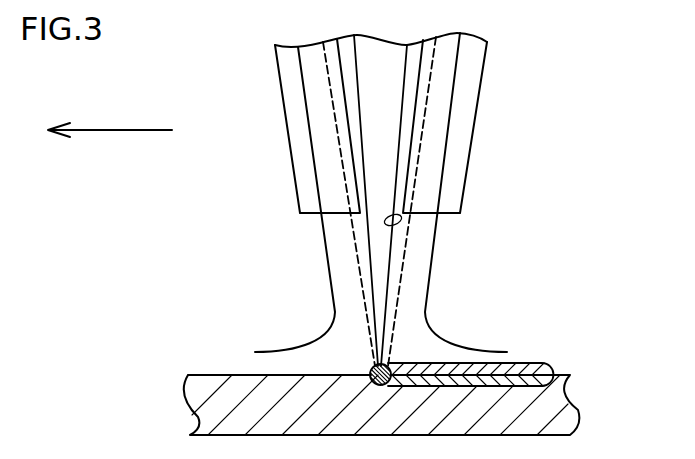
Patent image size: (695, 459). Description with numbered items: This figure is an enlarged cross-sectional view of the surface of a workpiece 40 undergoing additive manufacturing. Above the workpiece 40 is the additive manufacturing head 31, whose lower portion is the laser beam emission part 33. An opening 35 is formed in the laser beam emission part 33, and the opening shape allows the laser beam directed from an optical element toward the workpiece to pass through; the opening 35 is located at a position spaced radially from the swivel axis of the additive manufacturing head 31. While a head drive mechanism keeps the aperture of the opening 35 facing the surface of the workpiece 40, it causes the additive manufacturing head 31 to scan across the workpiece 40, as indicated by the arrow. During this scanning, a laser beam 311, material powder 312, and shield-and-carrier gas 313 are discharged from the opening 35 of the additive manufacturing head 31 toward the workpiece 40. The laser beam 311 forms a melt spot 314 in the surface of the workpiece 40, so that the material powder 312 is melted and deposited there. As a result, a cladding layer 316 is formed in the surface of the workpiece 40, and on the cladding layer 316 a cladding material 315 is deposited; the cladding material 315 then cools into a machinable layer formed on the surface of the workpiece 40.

The additive manufacturing head 31 is at (414, 199).
The laser beam emission part 33 is at (455, 173).
The opening 35 is at (398, 226).
The laser beam 311 is at (380, 278).
The material powder 312 is at (353, 249).
The shield-and-carrier gas 313 is at (322, 333).
The melt spot 314 is at (393, 363).
The cladding material 315 is at (530, 364).
The cladding layer 316 is at (522, 382).
The workpiece 40 is at (553, 410).